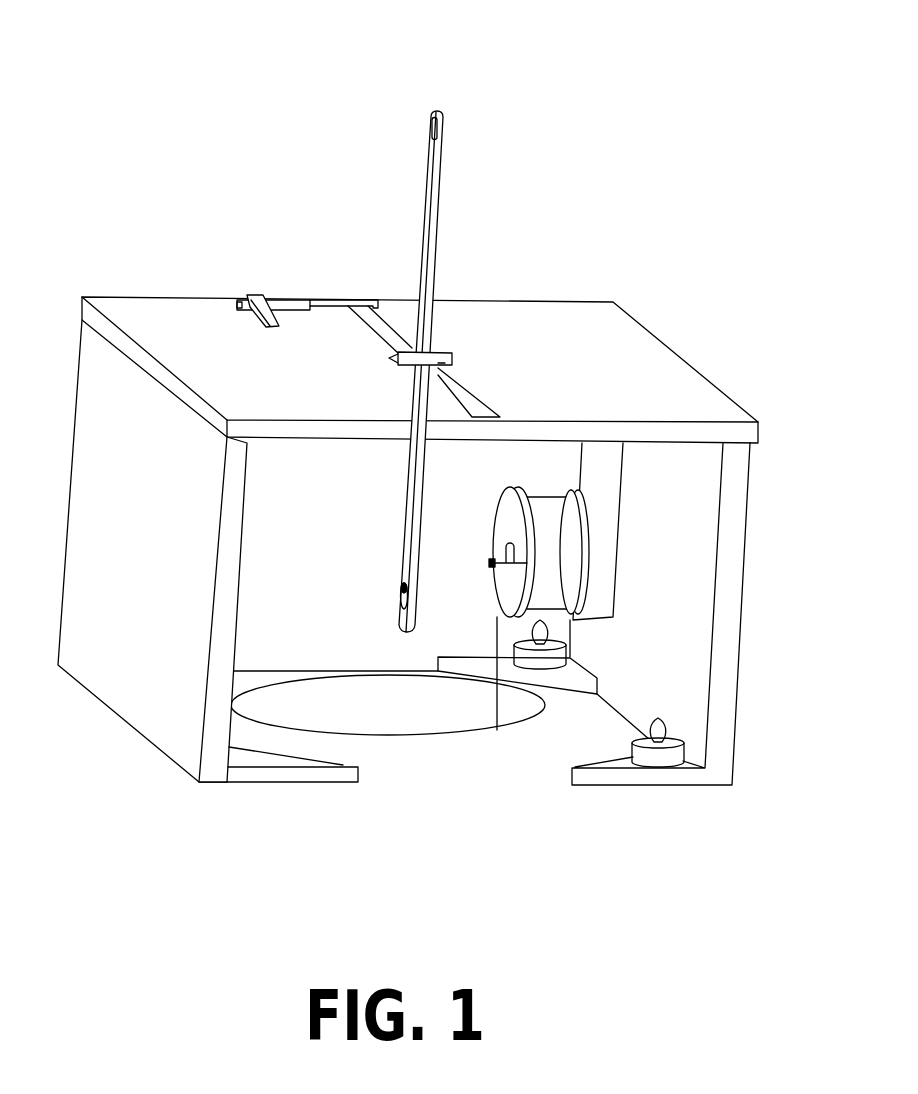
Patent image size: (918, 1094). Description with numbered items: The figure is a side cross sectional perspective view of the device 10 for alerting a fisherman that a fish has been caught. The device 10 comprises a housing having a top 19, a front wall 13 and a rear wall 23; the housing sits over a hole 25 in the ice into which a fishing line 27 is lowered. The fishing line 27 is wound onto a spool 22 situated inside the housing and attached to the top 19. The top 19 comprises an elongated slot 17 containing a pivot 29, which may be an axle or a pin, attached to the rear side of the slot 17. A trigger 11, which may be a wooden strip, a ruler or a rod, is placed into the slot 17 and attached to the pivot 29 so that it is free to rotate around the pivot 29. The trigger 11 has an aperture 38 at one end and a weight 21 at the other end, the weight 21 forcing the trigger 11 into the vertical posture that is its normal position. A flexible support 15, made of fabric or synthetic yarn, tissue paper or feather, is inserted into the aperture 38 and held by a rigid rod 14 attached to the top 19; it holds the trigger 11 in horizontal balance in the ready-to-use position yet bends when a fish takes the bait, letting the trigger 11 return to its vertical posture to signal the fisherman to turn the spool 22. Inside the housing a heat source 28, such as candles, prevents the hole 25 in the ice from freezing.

The device 10 is at (140, 207).
The trigger 11 is at (428, 158).
The front wall 13 is at (102, 560).
The rigid rod 14 is at (285, 305).
The flexible support 15 is at (356, 305).
The slot 17 is at (462, 397).
The top 19 is at (571, 338).
The weight 21 is at (405, 588).
The spool 22 is at (568, 584).
The rear wall 23 is at (737, 583).
The hole 25 is at (348, 717).
The fishing line 27 is at (497, 700).
The heat source 28 is at (660, 740).
The pivot 29 is at (437, 350).
The aperture 38 is at (431, 111).